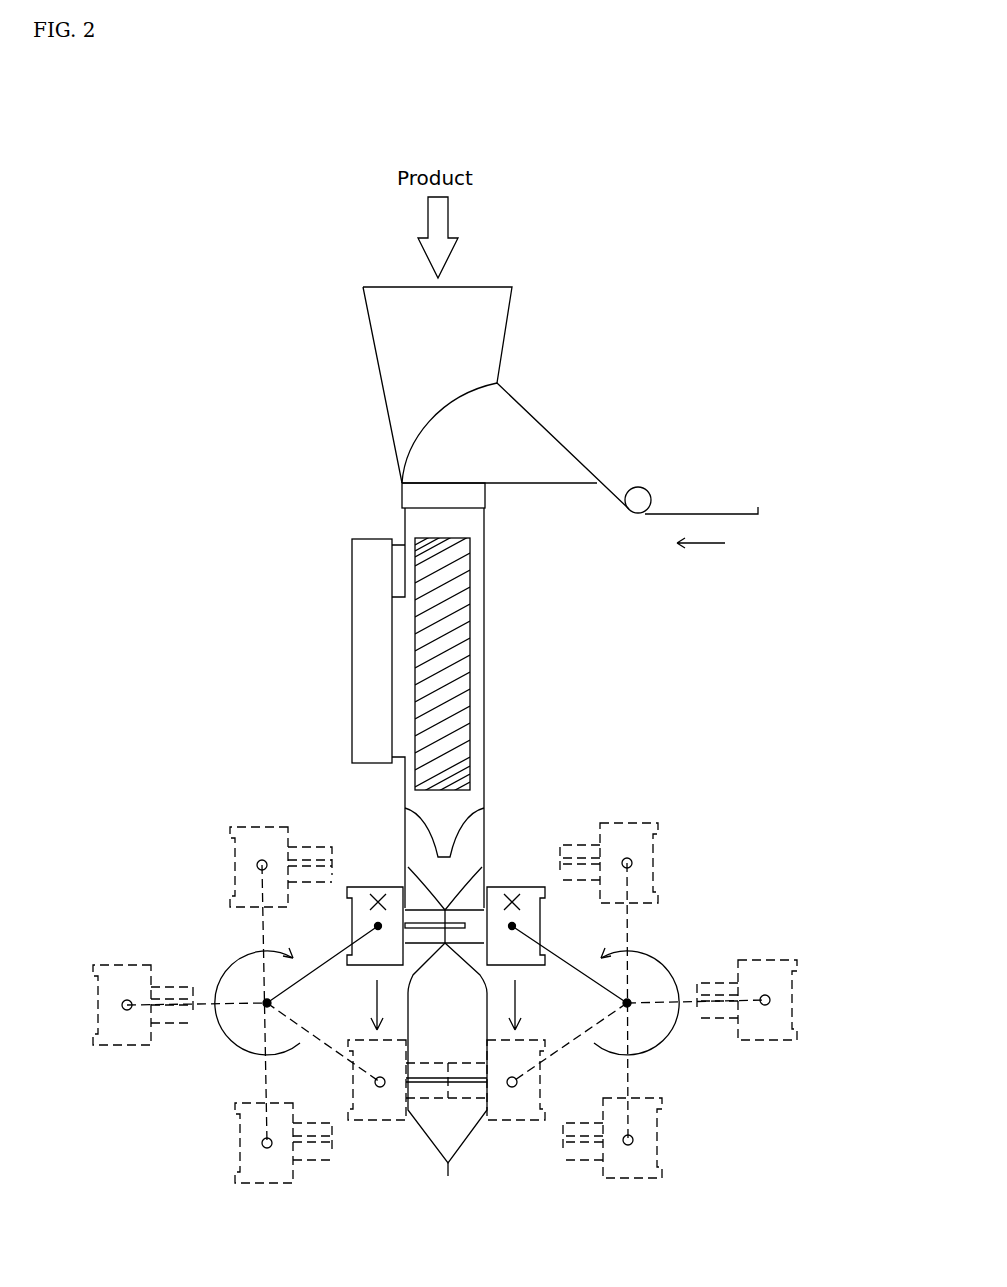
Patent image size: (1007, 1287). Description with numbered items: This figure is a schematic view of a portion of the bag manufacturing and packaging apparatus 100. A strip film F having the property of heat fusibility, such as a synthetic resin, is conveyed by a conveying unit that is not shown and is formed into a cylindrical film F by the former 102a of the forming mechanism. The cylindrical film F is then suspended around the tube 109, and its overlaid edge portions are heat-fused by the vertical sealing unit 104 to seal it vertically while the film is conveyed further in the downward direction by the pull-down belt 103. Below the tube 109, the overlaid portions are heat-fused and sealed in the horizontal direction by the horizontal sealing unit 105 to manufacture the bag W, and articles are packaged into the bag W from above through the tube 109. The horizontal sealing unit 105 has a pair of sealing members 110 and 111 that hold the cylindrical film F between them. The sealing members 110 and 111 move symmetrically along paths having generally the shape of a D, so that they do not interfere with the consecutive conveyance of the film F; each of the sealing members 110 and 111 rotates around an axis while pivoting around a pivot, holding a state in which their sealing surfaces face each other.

The bag manufacturing and packaging apparatus 100 is at (699, 204).
The former 102a is at (562, 487).
The pull-down belt 103 is at (468, 677).
The vertical sealing unit 104 is at (352, 597).
The horizontal sealing unit 105 is at (742, 861).
The tube 109 is at (484, 594).
The sealing member 110 is at (415, 907).
The sealing member 111 is at (477, 907).
The film F is at (703, 516).
The bag W is at (422, 1145).